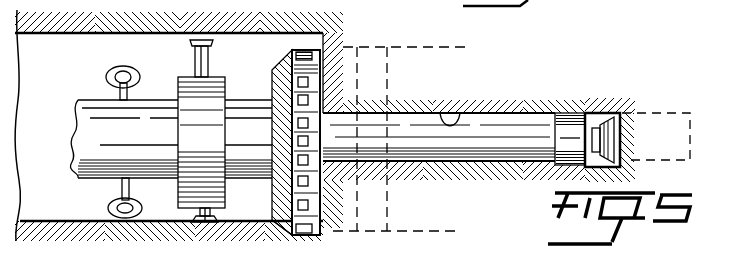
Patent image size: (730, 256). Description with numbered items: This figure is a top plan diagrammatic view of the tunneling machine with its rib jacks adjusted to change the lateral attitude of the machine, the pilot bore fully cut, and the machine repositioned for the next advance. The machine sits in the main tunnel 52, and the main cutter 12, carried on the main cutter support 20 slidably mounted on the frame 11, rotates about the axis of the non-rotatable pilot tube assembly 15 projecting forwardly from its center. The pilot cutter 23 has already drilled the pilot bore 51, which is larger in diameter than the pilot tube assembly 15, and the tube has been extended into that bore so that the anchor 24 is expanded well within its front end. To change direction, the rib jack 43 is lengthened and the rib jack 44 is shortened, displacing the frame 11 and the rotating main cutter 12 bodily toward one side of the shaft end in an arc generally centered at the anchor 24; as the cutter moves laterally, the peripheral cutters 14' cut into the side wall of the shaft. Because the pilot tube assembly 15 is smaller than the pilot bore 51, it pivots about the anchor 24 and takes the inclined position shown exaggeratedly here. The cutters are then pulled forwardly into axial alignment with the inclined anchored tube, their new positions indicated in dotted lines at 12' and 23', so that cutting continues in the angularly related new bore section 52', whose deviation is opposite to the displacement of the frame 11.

The frame 11 is at (185, 127).
The main cutter 12 is at (314, 118).
The main cutter advanced position 12' is at (396, 238).
The peripheral cutters 14' is at (273, 211).
The pilot tube assembly 15 is at (439, 110).
The main cutter support 20 is at (250, 106).
The pilot cutter 23 is at (629, 140).
The pilot cutter advanced position 23' is at (656, 122).
The anchor 24 is at (571, 113).
The rib jack 43 is at (212, 57).
The rib jack 44 is at (219, 215).
The pilot bore 51 is at (450, 117).
The main tunnel 52 is at (325, 133).
The new bore section 52' is at (408, 123).